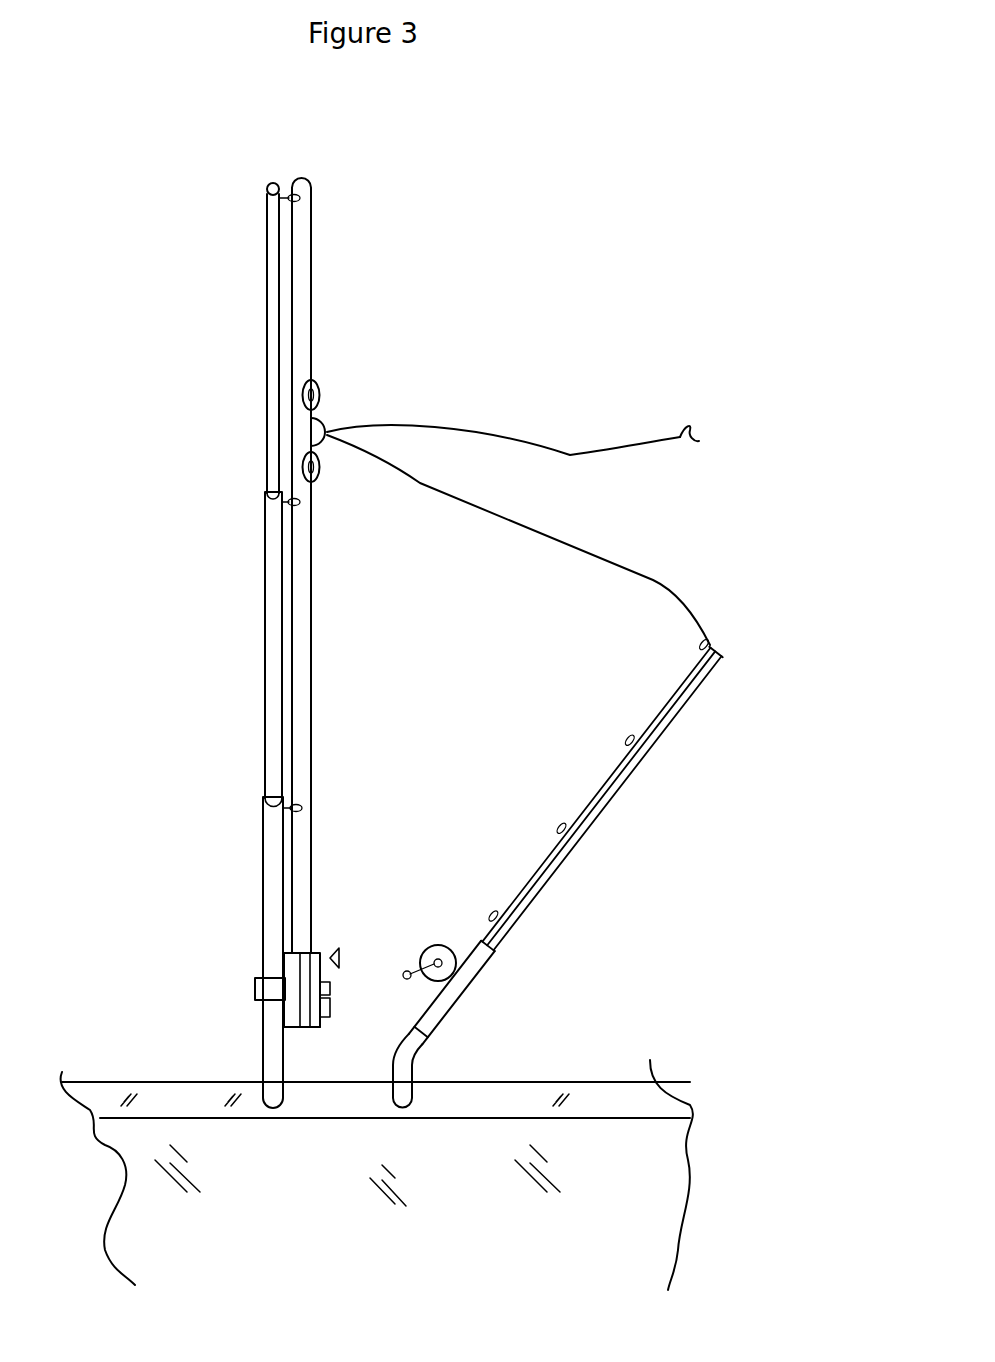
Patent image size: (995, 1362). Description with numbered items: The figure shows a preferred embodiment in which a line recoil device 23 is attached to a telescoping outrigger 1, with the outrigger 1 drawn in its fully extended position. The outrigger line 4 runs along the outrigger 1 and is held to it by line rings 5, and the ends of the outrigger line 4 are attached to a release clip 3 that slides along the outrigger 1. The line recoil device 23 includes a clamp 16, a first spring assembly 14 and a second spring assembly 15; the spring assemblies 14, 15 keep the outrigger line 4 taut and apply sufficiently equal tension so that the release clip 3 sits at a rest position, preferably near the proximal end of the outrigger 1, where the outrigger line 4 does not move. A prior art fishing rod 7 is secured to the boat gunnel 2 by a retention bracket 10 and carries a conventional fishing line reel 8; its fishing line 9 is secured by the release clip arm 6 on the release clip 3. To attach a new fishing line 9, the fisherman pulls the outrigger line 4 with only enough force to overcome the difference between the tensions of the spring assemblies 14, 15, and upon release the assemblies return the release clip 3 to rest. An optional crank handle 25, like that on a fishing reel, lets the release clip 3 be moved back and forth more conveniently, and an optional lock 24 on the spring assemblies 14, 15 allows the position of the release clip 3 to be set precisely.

The telescoping outrigger 1 is at (265, 428).
The boat gunnel 2 is at (192, 1090).
The release clip 3 is at (318, 398).
The outrigger line 4 is at (312, 270).
The line rings 5 is at (296, 204).
The release clip arm 6 is at (331, 445).
The fishing rod 7 is at (590, 823).
The fishing line reel 8 is at (440, 945).
The fishing line 9 is at (570, 455).
The retention bracket 10 is at (400, 1073).
The first spring assembly 14 is at (318, 952).
The second spring assembly 15 is at (283, 967).
The clamp 16 is at (258, 988).
The line recoil device 23 is at (290, 1027).
The lock 24 is at (330, 1007).
The crank handle 25 is at (342, 957).